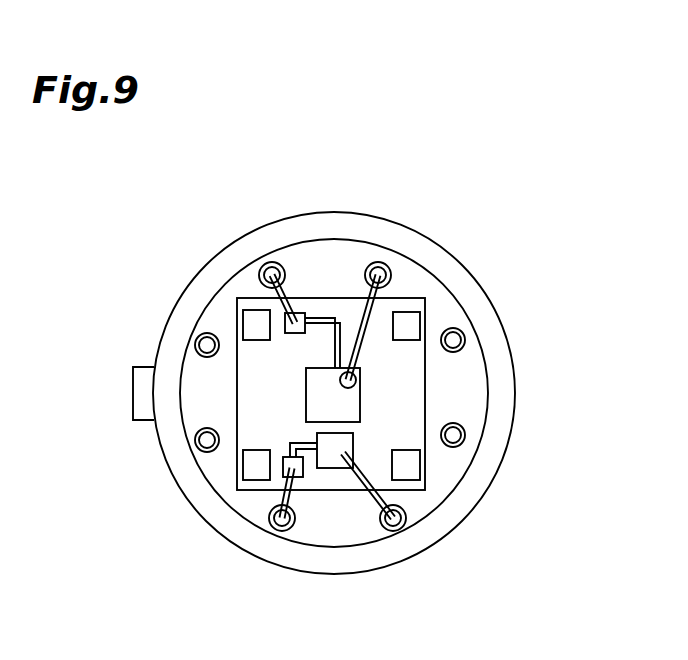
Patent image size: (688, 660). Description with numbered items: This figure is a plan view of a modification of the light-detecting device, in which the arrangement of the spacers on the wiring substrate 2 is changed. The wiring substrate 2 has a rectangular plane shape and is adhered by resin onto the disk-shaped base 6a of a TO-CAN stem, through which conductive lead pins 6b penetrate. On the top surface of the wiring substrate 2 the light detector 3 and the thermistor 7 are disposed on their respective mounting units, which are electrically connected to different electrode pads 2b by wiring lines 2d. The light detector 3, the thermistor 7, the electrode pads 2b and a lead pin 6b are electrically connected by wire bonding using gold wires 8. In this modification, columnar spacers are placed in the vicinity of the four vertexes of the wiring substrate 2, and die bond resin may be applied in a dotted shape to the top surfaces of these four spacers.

The wiring substrate 2 is at (411, 303).
The electrode pad 2b is at (300, 313).
The wiring line 2d is at (337, 317).
The light detector 3 is at (348, 402).
The base 6a is at (453, 322).
The lead pin 6b is at (257, 273).
The thermistor 7 is at (333, 460).
The wire 8 is at (280, 262).